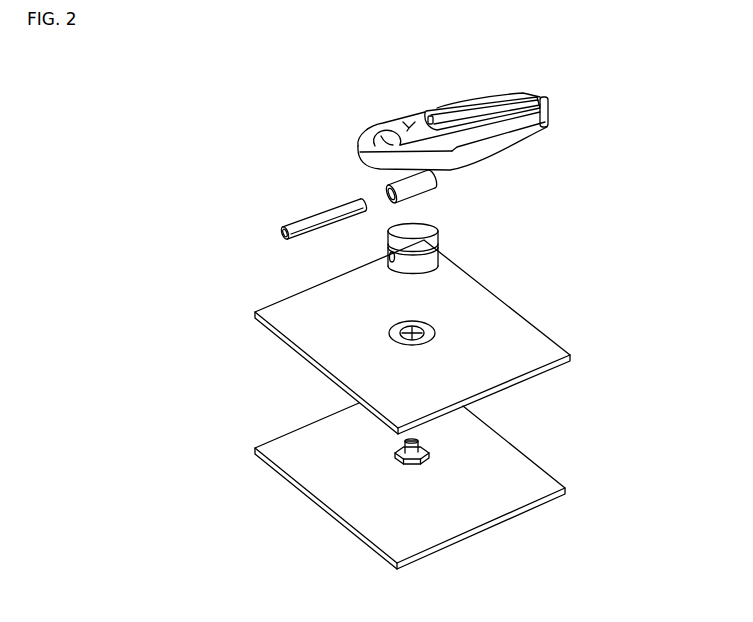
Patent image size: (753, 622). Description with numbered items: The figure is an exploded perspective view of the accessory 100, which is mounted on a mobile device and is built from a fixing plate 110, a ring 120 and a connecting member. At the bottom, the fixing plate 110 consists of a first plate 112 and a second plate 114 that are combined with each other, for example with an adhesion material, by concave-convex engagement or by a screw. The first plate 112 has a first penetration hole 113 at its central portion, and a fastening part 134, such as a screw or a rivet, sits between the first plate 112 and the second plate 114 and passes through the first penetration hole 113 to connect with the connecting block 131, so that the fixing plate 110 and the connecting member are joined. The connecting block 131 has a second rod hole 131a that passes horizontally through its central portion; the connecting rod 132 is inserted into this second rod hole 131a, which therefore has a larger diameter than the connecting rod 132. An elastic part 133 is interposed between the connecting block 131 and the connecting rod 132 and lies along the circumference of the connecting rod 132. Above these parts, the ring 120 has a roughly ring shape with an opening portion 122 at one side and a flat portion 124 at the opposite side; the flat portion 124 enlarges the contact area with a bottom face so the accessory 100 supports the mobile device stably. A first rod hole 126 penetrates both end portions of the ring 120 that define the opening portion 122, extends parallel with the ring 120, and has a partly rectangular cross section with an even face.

The accessory 100 is at (443, 64).
The fixing plate 110 is at (180, 325).
The first plate 112 is at (303, 329).
The first penetration hole 113 is at (436, 333).
The second plate 114 is at (305, 447).
The ring 120 is at (545, 99).
The opening portion 122 is at (366, 131).
The flat portion 124 is at (549, 125).
The first rod hole 126 is at (424, 113).
The connecting block 131 is at (419, 238).
The second rod hole 131a is at (382, 253).
The connecting rod 132 is at (330, 214).
The elastic part 133 is at (433, 175).
The fastening part 134 is at (430, 450).